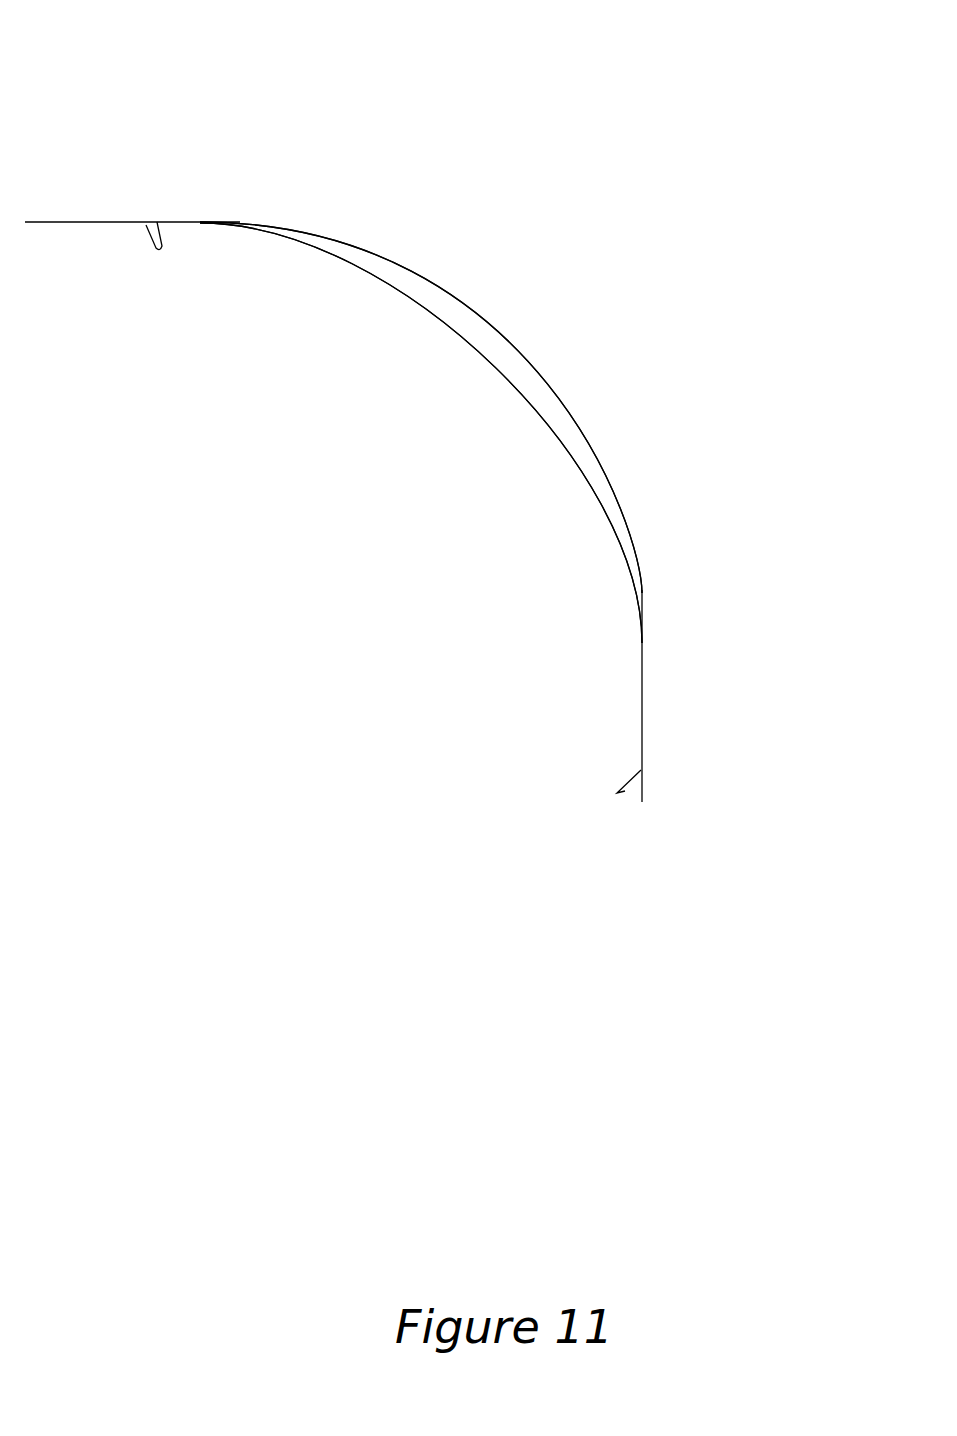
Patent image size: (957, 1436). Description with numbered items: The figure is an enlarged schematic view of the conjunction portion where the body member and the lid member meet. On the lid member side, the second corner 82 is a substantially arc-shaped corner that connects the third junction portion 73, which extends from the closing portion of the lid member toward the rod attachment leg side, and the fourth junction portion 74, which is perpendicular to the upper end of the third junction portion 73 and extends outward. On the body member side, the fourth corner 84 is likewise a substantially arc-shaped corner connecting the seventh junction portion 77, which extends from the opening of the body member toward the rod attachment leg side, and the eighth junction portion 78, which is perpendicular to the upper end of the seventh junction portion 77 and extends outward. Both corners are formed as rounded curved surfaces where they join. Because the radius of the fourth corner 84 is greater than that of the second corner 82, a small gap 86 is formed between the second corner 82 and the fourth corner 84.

The third junction portion 73 is at (642, 735).
The fourth junction portion 74 is at (95, 222).
The seventh junction portion 77 is at (617, 793).
The eighth junction portion 78 is at (157, 222).
The second corner 82 is at (507, 375).
The fourth corner 84 is at (482, 318).
The small gap 86 is at (423, 292).